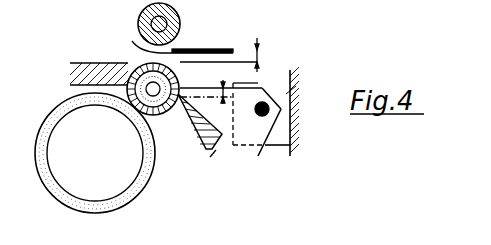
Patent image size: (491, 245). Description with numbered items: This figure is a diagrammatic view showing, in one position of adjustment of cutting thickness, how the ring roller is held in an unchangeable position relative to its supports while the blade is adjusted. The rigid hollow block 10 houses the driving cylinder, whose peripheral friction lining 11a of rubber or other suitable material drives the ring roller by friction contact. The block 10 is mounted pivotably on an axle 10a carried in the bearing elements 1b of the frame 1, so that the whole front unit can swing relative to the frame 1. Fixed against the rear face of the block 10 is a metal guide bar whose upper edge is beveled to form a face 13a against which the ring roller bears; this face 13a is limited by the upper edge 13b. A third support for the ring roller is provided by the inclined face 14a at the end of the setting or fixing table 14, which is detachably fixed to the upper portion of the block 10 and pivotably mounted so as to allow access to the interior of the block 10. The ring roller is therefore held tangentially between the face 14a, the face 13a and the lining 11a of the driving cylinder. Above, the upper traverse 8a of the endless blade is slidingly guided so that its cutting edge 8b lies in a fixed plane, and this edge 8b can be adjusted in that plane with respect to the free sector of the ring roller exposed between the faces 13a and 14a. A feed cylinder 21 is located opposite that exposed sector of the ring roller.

The frame 1 is at (292, 75).
The bearing elements 1b is at (296, 90).
The upper traverse of the endless blade 8a is at (197, 51).
The cutting edge of the blade 8b is at (171, 39).
The rigid hollow block 10 is at (263, 133).
The axle 10a is at (269, 108).
The peripheral friction lining 11a is at (54, 119).
The bevel-shaped face of the guide bar 13a is at (178, 110).
The upper edge of the guide bar 13b is at (180, 94).
The setting or fixing table 14 is at (80, 59).
The inclined face of the table 14a is at (133, 69).
The feed cylinder 21 is at (142, 15).